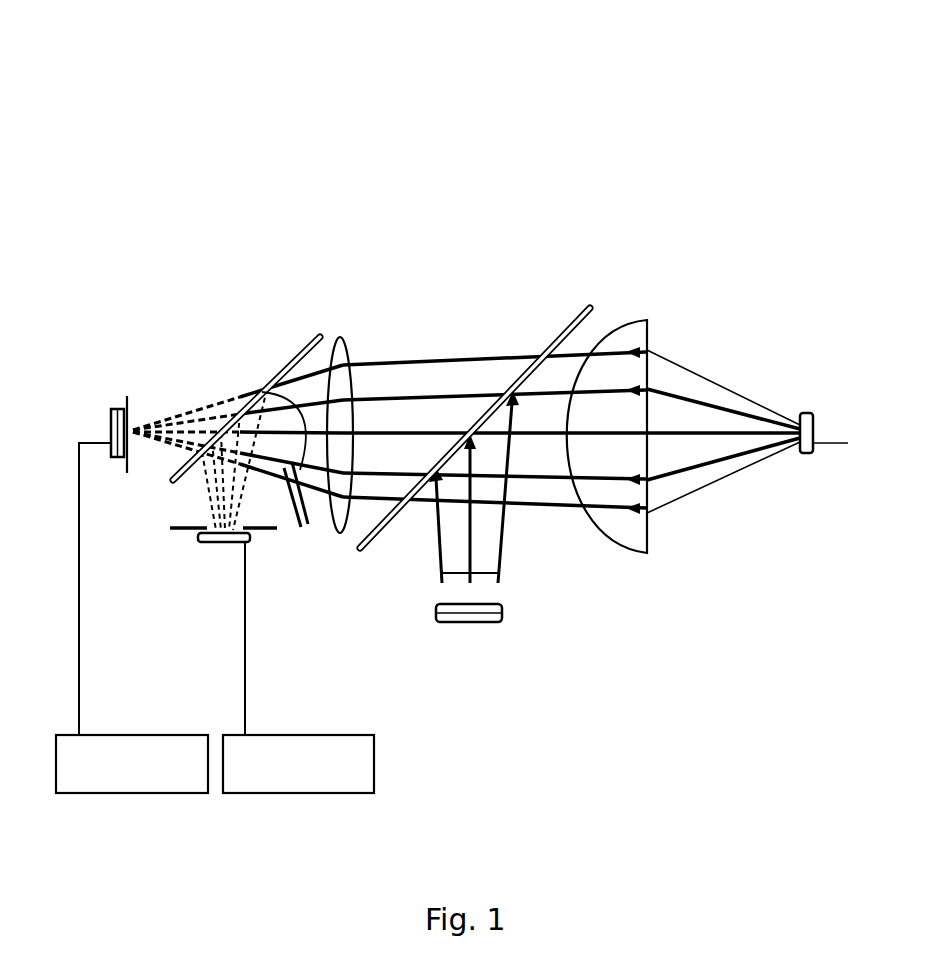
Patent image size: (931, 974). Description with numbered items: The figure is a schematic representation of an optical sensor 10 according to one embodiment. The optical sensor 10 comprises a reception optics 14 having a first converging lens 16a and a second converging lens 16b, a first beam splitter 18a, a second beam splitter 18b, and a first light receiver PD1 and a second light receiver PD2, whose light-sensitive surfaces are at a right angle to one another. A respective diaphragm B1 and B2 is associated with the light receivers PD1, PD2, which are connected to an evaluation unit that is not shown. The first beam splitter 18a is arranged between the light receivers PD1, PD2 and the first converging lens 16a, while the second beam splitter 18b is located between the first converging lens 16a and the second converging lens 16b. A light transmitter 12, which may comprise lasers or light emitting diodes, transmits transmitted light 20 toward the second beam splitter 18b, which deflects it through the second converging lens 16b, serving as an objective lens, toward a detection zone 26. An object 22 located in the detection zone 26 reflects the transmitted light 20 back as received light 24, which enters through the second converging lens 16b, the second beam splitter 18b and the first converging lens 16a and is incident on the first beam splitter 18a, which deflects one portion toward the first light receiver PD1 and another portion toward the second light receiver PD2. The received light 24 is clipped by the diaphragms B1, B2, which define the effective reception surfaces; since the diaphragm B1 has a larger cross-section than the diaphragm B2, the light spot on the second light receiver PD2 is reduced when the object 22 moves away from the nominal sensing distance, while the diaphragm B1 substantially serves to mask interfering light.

The optical sensor 10 is at (414, 118).
The light transmitter 12 is at (460, 623).
The reception optics 14 is at (592, 290).
The first converging lens 16a is at (338, 537).
The second converging lens 16b is at (623, 540).
The first beam splitter 18a is at (290, 356).
The second beam splitter 18b is at (566, 331).
The transmitted light 20 is at (480, 576).
The object 22 is at (811, 455).
The received light 24 is at (297, 473).
The detection zone 26 is at (752, 342).
The first light receiver PD1 is at (214, 545).
The second light receiver PD2 is at (118, 400).
The diaphragm B1 is at (173, 531).
The diaphragm B2 is at (131, 403).